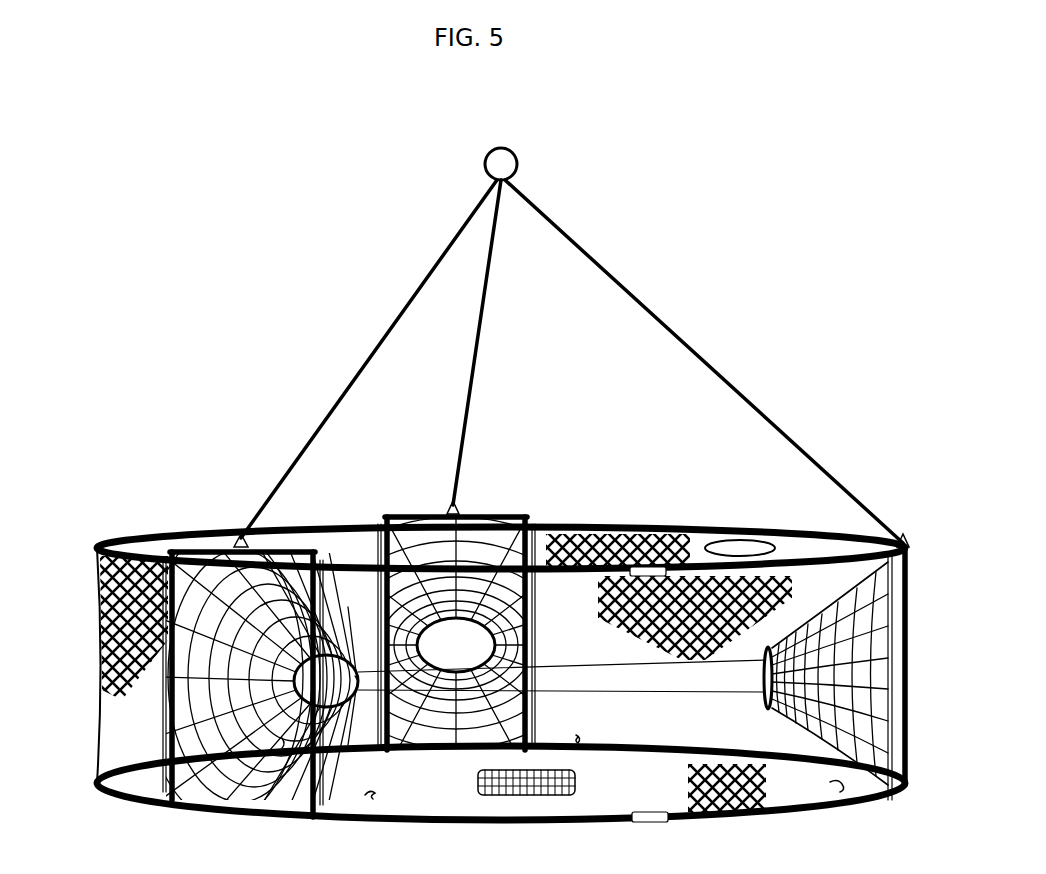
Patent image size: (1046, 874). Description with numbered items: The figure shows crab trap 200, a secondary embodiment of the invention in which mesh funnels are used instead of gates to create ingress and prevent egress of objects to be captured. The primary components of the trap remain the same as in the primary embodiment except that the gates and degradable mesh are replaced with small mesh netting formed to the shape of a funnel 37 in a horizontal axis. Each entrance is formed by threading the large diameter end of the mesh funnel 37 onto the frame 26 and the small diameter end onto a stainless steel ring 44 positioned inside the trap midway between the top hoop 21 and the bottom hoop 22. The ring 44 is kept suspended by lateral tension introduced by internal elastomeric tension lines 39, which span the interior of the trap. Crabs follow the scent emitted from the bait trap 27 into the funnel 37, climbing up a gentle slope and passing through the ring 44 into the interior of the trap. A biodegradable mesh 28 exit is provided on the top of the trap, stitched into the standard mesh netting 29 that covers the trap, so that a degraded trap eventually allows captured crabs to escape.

The crab trap 200 is at (493, 106).
The top hoop 21 is at (113, 540).
The bottom hoop 22 is at (112, 798).
The frame 26 is at (530, 615).
The bait trap 27 is at (580, 782).
The biodegradable mesh 28 is at (705, 545).
The standard mesh netting 29 is at (616, 557).
The funnel 37 is at (258, 681).
The elastomeric tension lines 39 is at (605, 690).
The stainless steel ring 44 is at (428, 657).